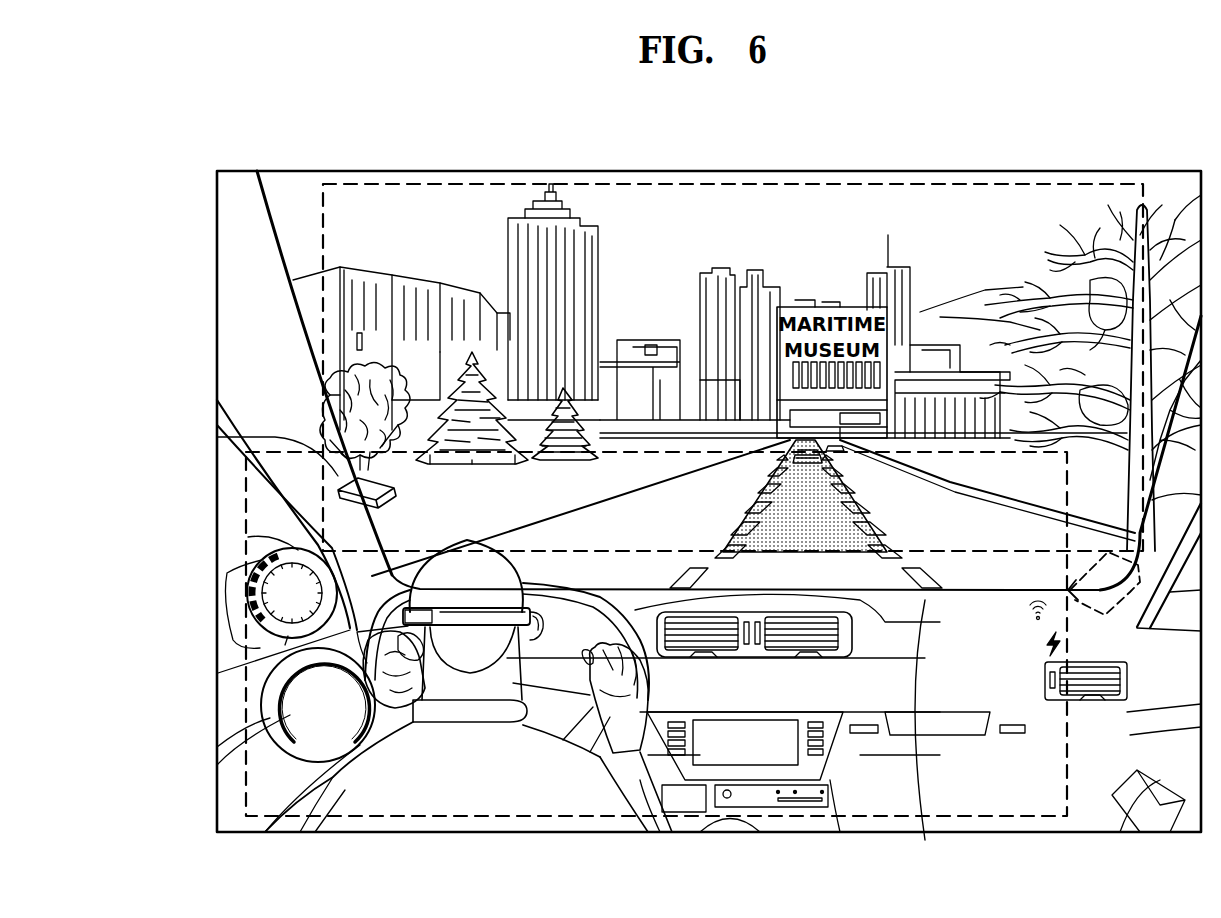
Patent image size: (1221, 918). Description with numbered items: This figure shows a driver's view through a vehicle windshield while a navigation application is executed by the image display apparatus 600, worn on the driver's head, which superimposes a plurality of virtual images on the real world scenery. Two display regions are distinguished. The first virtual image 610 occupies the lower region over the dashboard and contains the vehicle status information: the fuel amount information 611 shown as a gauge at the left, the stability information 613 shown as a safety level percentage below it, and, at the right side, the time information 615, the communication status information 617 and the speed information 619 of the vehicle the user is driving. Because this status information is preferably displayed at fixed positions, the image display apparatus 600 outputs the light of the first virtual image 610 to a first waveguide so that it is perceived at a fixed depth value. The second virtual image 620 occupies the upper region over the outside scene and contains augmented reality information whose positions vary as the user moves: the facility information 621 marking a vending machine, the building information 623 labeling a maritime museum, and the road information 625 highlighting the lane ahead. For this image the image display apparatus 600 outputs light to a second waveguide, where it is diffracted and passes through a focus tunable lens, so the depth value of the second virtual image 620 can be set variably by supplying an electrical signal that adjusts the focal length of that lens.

The image display apparatus 600 is at (475, 620).
The first virtual image 610 is at (246, 480).
The fuel amount information 611 is at (248, 545).
The stability information 613 is at (261, 705).
The time information 615 is at (993, 570).
The communication status information 617 is at (975, 605).
The speed information 619 is at (1022, 655).
The second virtual image 620 is at (623, 184).
The facility information 621 is at (340, 480).
The building information 623 is at (858, 305).
The road information 625 is at (775, 500).